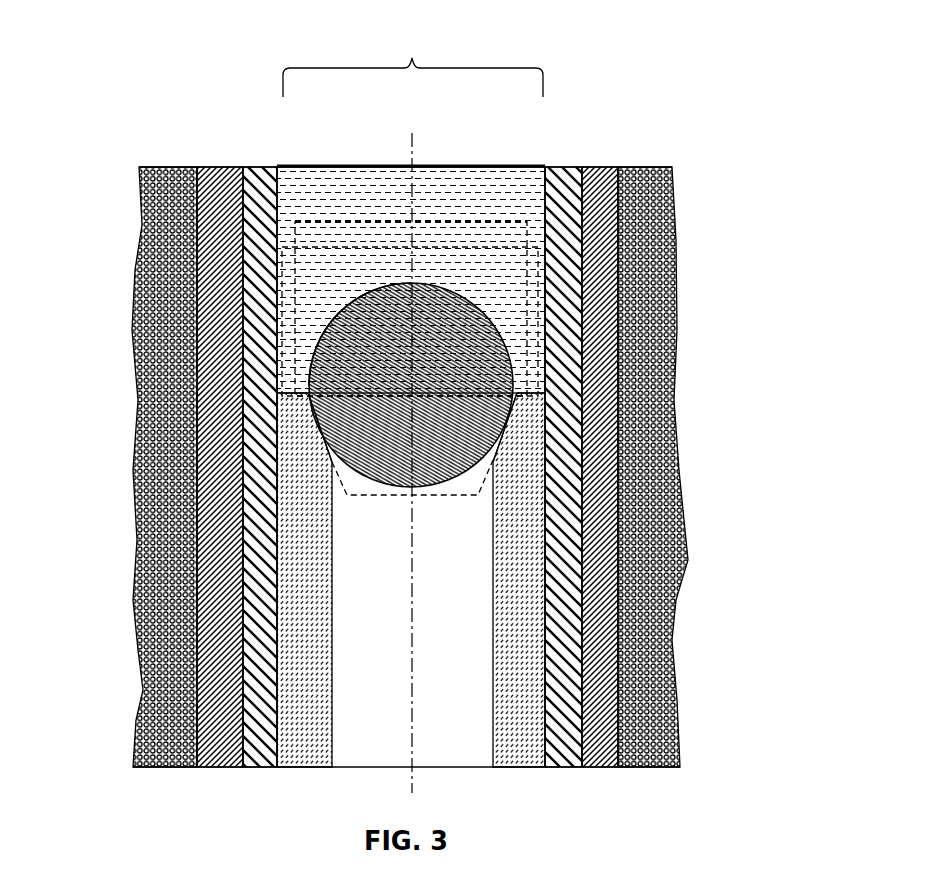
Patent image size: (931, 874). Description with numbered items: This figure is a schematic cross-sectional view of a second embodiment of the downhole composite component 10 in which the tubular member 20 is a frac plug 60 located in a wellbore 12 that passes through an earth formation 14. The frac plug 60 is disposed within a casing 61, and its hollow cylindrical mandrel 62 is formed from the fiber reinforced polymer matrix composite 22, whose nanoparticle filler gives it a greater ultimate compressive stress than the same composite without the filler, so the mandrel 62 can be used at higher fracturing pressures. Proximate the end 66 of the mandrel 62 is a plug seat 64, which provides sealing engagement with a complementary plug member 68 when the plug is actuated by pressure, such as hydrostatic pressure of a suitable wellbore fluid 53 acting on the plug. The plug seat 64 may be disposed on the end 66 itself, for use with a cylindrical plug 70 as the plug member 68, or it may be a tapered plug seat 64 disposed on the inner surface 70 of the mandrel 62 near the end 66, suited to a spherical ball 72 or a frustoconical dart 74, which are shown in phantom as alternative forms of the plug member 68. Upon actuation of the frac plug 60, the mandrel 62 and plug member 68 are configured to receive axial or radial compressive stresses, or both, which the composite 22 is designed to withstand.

The downhole composite component 10 is at (708, 128).
The wellbore 12 is at (612, 567).
The earth formation 14 is at (583, 307).
The tubular member 20 is at (412, 55).
The fiber reinforced polymer matrix composite 22 is at (528, 473).
The wellbore fluid 53 is at (497, 188).
The frac plug 60 is at (430, 270).
The casing 61 is at (535, 367).
The mandrel 62 is at (548, 427).
The plug seat 64 is at (305, 395).
The end 66 is at (343, 395).
The plug member 68 is at (480, 299).
The inner surface 70 is at (540, 307).
The spherical ball 72 is at (355, 292).
The frustoconical dart 74 is at (517, 227).